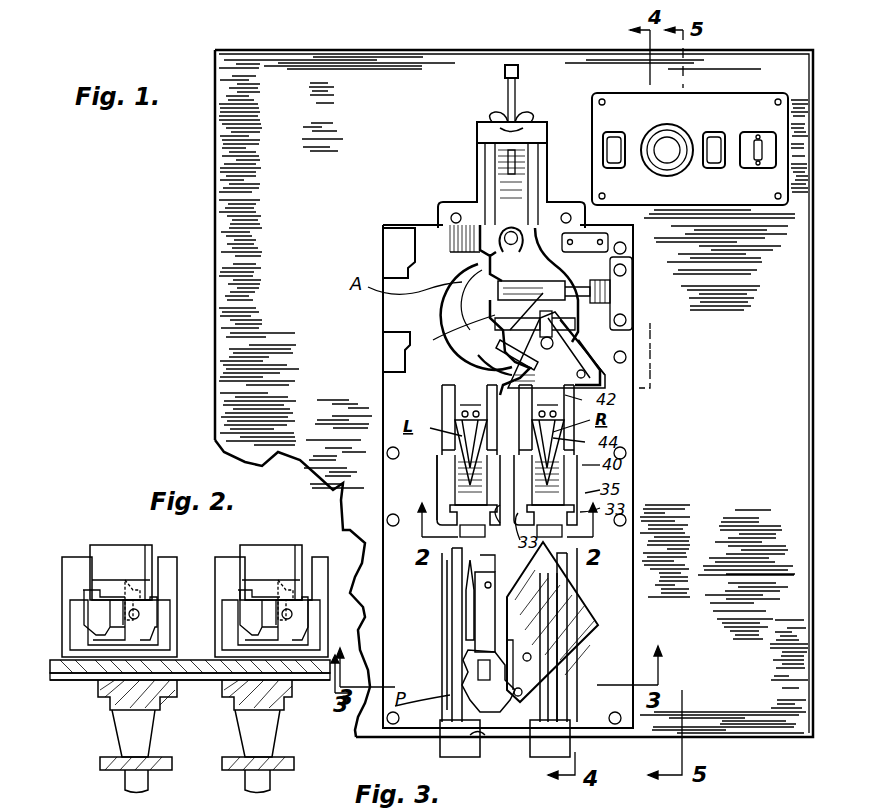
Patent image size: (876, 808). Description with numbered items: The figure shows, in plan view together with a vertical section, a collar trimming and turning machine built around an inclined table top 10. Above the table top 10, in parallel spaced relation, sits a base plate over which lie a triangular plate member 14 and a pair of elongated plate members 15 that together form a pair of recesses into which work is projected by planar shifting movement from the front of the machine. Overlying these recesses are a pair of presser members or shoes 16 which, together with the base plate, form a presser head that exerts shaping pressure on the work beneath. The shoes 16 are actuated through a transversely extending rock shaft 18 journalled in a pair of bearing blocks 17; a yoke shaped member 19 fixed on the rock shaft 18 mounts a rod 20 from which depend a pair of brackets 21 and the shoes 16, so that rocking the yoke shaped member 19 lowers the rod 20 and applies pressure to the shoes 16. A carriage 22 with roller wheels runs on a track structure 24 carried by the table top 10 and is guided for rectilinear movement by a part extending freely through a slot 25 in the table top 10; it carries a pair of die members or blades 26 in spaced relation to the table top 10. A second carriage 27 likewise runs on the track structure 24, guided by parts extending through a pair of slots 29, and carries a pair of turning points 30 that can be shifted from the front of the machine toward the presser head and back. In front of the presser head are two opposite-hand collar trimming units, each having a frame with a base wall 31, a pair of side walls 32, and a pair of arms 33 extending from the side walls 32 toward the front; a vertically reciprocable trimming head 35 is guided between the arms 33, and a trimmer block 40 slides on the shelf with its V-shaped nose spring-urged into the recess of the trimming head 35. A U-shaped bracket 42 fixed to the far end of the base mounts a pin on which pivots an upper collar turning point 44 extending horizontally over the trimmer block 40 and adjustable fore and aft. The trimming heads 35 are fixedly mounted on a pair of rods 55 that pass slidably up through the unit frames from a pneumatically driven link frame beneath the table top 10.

In FIG. 1, the table top 10 is at (514, 393).
In FIG. 2, the table top 10 is at (56, 680).
In FIG. 1, the triangular plate member 14 is at (460, 252).
In FIG. 1, the elongated plate members 15 is at (580, 342).
In FIG. 1, the presser members or shoes 16 is at (478, 362).
In FIG. 1, the bearing blocks 17 is at (612, 292).
In FIG. 1, the rock shaft 18 is at (478, 300).
In FIG. 1, the yoke shaped member 19 is at (521, 249).
In FIG. 1, the rod 20 is at (481, 342).
In FIG. 1, the brackets 21 is at (580, 322).
In FIG. 1, the carriage 22 is at (488, 730).
In FIG. 2, the track structure 24 is at (160, 735).
In FIG. 1, the slot 25 is at (482, 598).
In FIG. 2, the slot 25 is at (195, 680).
In FIG. 1, the die members or blades 26 is at (552, 622).
In FIG. 1, the second carriage 27 is at (448, 745).
In FIG. 1, the slots 29 is at (445, 565).
In FIG. 2, the slots 29 is at (86, 673).
In FIG. 1, the turning points 30 is at (468, 630).
In FIG. 2, the base wall 31 is at (83, 633).
In FIG. 2, the side walls 32 is at (70, 605).
In FIG. 1, the arms 33 is at (437, 520).
In FIG. 2, the arms 33 is at (78, 565).
In FIG. 1, the trimming head 35 is at (460, 498).
In FIG. 2, the trimming head 35 is at (122, 550).
In FIG. 1, the trimmer block 40 is at (455, 464).
In FIG. 1, the U-shaped bracket 42 is at (445, 390).
In FIG. 1, the upper collar turning point 44 is at (462, 442).
In FIG. 2, the rods 55 is at (128, 783).